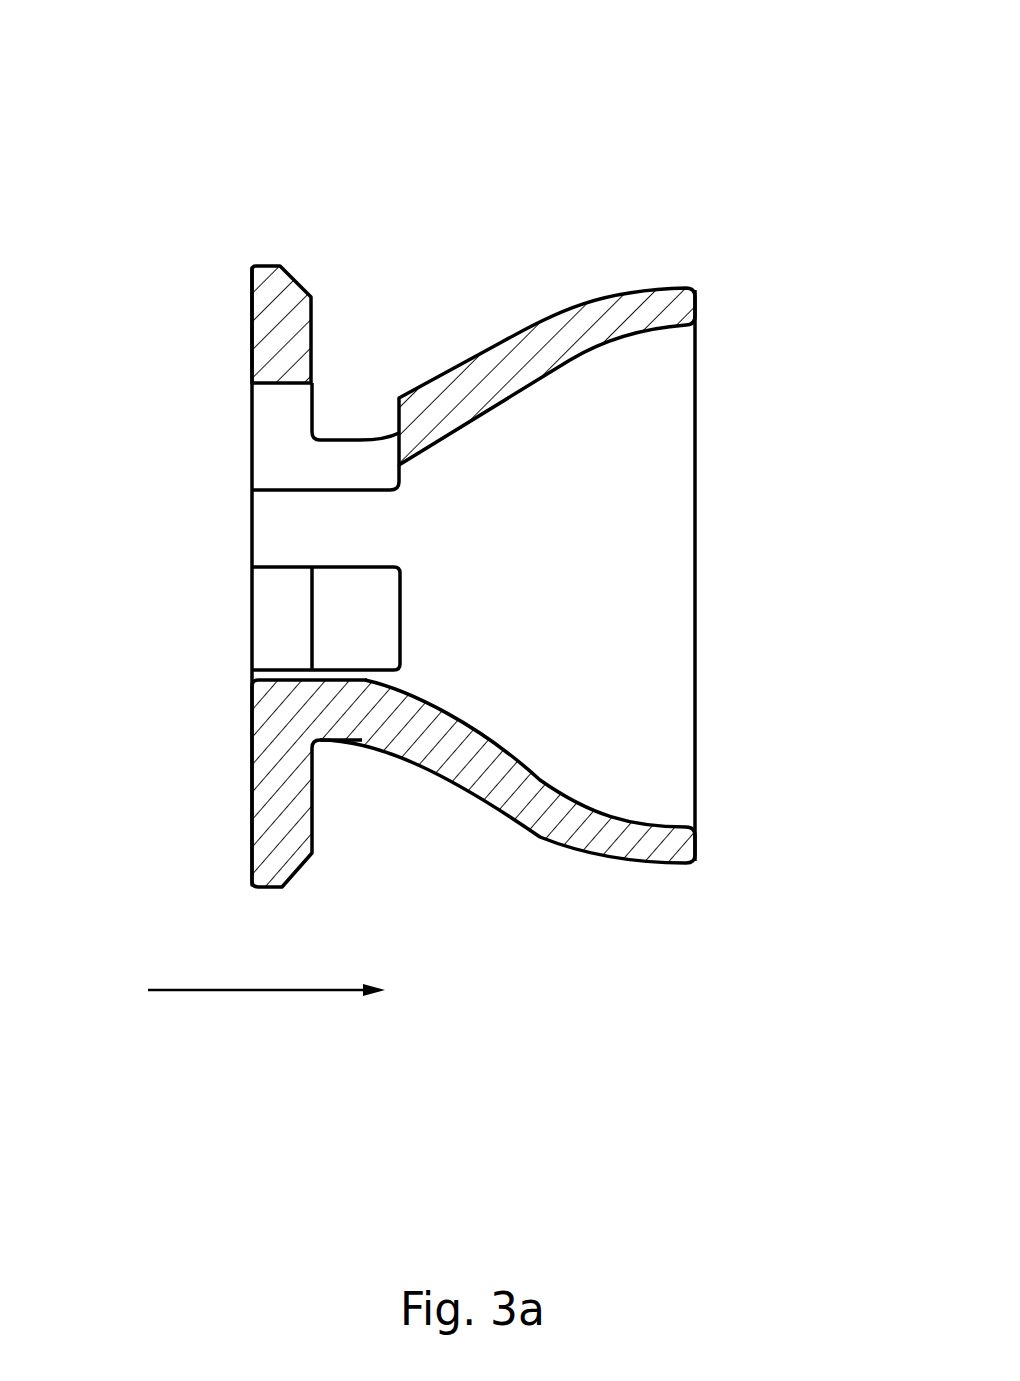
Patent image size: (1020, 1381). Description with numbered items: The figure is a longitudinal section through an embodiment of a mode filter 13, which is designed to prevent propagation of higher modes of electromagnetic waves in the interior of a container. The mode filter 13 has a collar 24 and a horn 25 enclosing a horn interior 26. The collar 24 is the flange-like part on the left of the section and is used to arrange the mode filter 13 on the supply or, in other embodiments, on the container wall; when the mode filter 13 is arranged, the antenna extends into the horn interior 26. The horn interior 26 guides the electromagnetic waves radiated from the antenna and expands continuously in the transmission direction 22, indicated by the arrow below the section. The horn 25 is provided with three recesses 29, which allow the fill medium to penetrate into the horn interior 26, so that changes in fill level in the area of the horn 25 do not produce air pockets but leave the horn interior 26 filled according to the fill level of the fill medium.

The mode filter 13 is at (260, 125).
The transmission direction 22 is at (260, 990).
The collar 24 is at (273, 737).
The horn 25 is at (538, 839).
The horn interior 26 is at (672, 557).
The recesses 29 is at (287, 459).